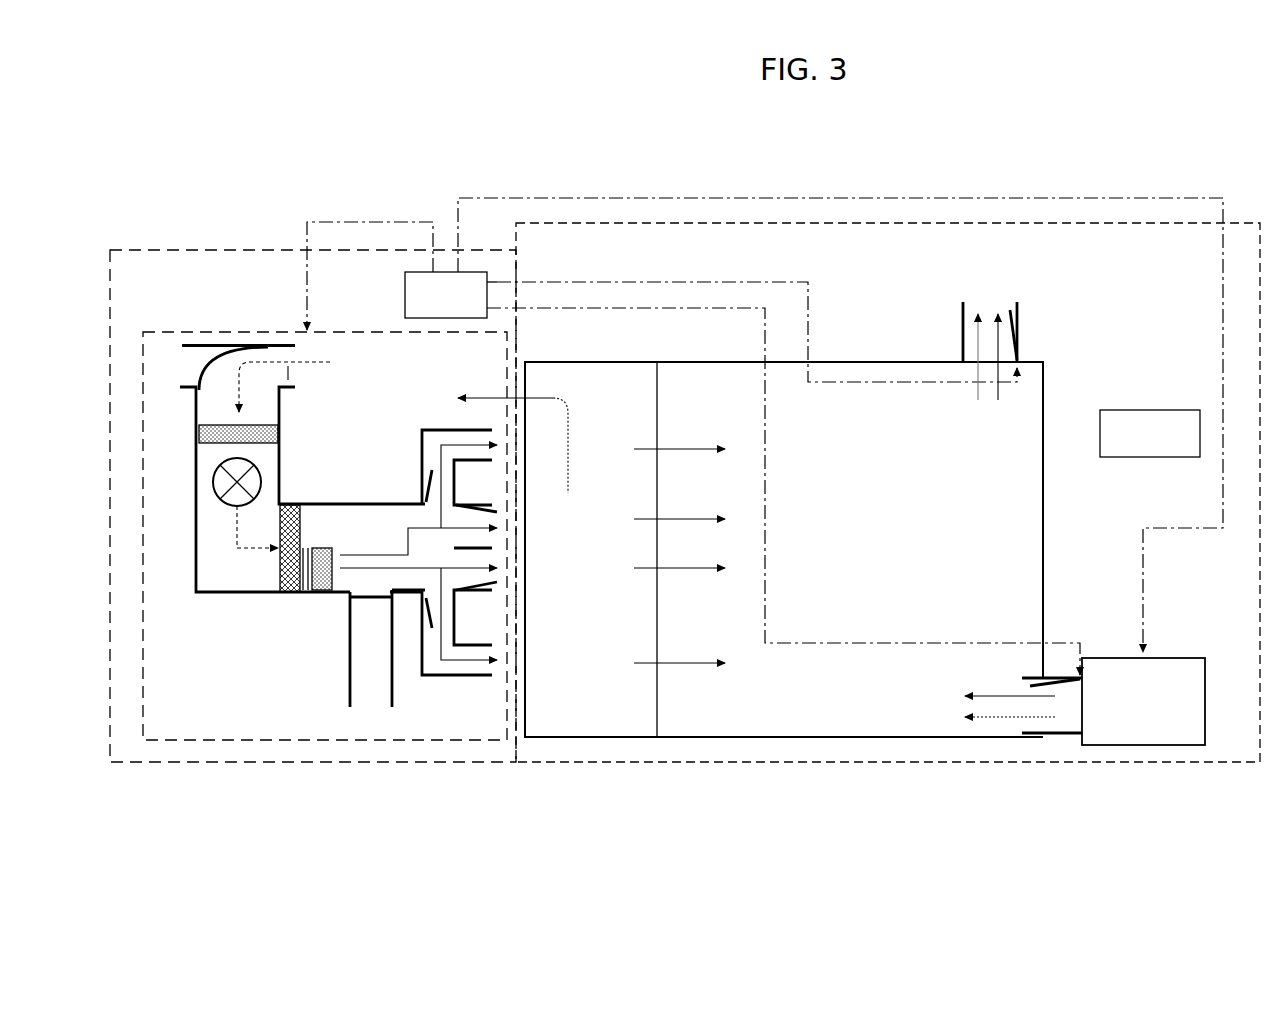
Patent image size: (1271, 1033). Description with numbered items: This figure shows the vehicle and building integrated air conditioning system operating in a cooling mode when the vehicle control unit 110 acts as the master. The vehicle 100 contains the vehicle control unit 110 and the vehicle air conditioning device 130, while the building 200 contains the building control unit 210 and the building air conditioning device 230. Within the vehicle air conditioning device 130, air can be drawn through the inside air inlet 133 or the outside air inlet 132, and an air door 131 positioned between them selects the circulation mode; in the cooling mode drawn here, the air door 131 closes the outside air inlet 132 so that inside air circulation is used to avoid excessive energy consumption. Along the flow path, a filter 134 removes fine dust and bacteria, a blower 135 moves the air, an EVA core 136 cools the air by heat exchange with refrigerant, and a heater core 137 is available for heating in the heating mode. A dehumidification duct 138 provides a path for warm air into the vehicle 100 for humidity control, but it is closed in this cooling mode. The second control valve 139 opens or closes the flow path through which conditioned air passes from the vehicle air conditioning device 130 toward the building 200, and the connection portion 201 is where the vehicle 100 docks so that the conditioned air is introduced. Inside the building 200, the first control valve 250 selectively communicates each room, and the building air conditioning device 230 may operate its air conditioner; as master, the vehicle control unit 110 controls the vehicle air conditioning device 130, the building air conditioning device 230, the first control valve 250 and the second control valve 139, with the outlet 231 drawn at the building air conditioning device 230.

The vehicle 100 is at (180, 762).
The vehicle control unit 110 is at (765, 436).
The vehicle air conditioning device 130 is at (258, 742).
The air door 131 is at (200, 385).
The outside air inlet 132 is at (181, 358).
The inside air inlet 133 is at (290, 373).
The filter 134 is at (278, 432).
The blower 135 is at (262, 482).
The EVA core 136 is at (280, 565).
The heater core 137 is at (320, 590).
The dehumidification duct 138 is at (372, 640).
The second control valve 139 is at (477, 600).
The building 200 is at (792, 762).
The connection portion 201 is at (585, 735).
The building control unit 210 is at (1150, 433).
The building air conditioning device 230 is at (1085, 701).
The outlet door 231 is at (1057, 685).
The first control valve 250 is at (1012, 317).